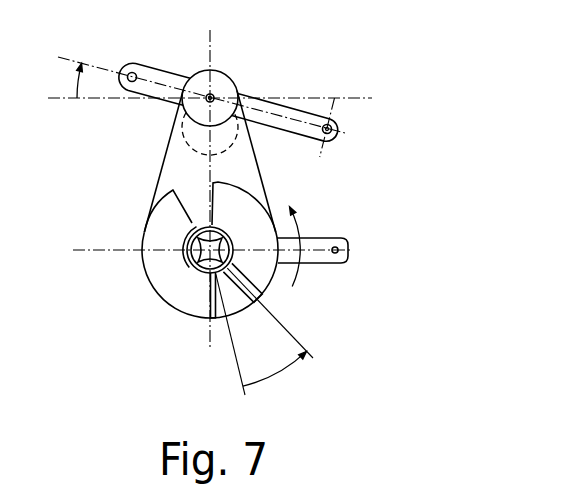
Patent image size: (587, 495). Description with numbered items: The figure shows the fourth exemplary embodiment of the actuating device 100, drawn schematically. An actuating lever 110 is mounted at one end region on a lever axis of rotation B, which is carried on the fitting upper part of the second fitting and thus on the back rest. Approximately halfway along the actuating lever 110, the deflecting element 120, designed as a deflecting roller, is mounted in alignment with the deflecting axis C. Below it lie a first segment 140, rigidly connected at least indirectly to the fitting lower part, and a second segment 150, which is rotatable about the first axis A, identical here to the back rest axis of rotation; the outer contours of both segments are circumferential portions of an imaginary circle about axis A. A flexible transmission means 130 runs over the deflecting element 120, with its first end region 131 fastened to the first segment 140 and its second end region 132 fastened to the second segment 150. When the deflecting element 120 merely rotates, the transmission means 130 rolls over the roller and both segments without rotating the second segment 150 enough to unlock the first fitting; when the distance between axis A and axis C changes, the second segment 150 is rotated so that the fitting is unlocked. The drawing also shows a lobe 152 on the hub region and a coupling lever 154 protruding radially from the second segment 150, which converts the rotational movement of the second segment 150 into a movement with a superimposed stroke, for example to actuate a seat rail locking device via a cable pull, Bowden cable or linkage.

The actuating device 100 is at (415, 98).
The actuating lever 110 is at (147, 89).
The deflecting element 120 is at (222, 69).
The transmission means 130 is at (262, 170).
The first end region 131 is at (208, 306).
The second end region 132 is at (253, 293).
The first segment 140 is at (172, 292).
The second segment 150 is at (248, 221).
The cam lobe 152 is at (184, 232).
The coupling lever 154 is at (343, 239).
The first axis A is at (186, 262).
The lever axis of rotation B is at (330, 117).
The deflecting axis C is at (205, 70).